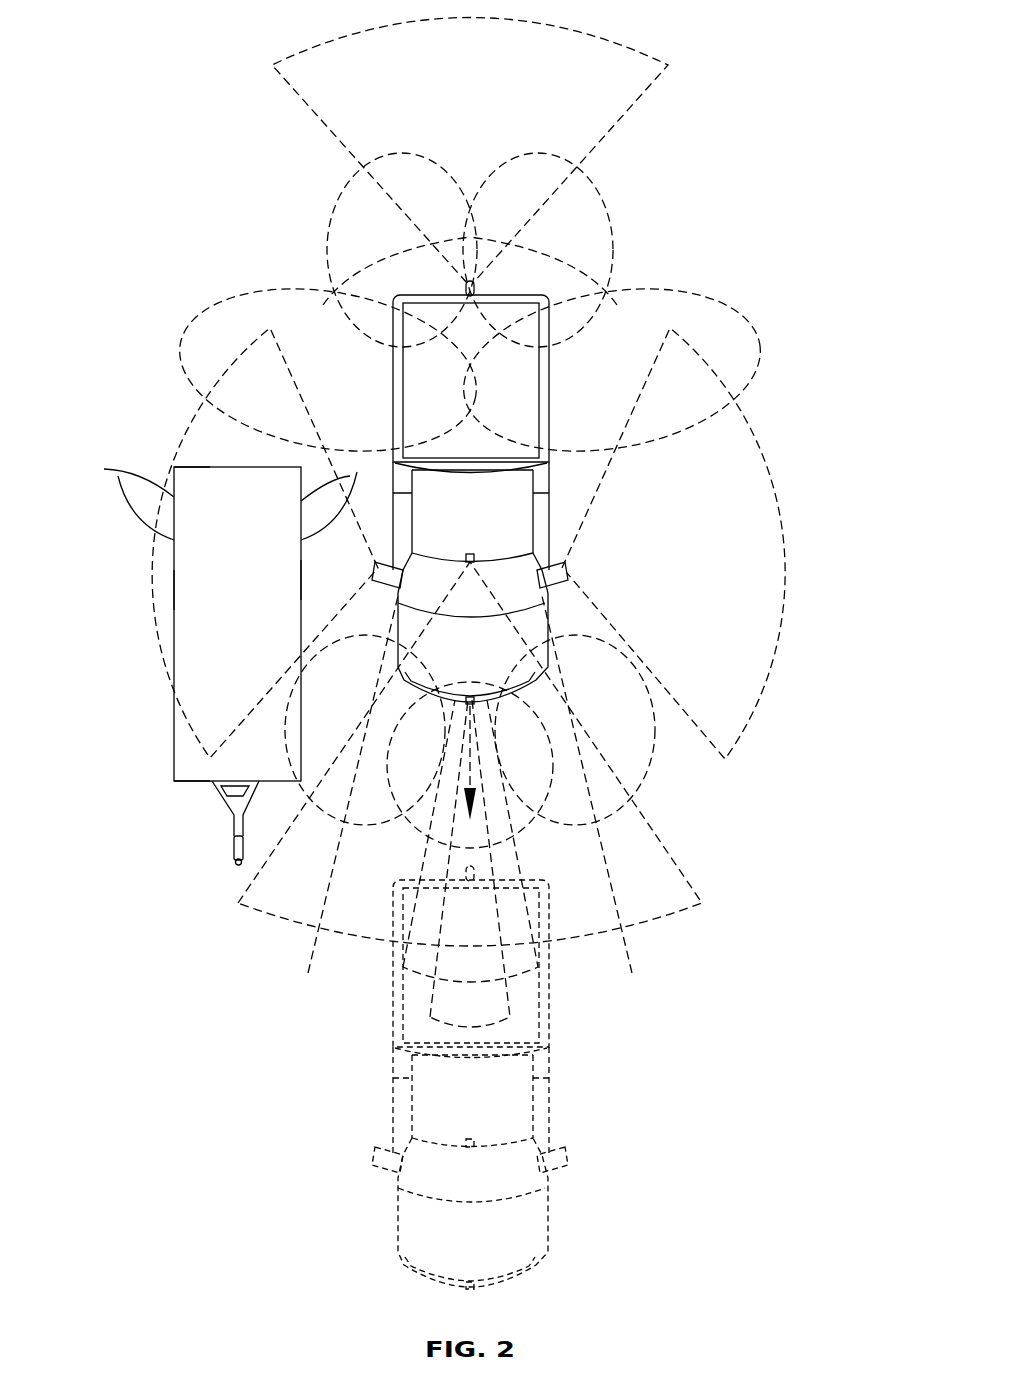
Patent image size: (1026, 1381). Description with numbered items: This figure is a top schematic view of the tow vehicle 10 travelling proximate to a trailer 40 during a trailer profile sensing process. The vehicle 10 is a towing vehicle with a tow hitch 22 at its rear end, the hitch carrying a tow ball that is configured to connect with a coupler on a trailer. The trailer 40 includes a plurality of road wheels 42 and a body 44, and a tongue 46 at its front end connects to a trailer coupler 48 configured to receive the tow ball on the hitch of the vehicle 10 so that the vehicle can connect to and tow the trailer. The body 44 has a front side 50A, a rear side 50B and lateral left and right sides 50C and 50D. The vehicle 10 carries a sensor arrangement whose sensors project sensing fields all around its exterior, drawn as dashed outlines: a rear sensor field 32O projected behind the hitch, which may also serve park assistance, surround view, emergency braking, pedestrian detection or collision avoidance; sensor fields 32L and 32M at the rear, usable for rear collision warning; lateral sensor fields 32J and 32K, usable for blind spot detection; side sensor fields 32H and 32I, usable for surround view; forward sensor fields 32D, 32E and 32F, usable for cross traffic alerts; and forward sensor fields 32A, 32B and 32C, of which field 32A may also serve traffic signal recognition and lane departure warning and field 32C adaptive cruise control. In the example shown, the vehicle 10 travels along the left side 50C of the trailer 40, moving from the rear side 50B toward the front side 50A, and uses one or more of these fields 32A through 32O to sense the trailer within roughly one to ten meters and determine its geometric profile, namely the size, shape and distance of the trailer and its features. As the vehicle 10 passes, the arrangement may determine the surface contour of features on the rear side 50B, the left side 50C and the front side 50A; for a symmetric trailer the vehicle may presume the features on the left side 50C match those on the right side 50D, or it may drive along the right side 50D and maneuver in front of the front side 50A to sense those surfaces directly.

The motor vehicle 10 is at (572, 280).
The tow hitch 22 is at (465, 283).
The rear sensor field 32O is at (660, 45).
The sensor field 32L is at (410, 152).
The sensor field 32M is at (530, 152).
The sensor field 32J is at (275, 298).
The sensor field 32K is at (705, 298).
The sensor field 32H is at (203, 403).
The sensor field 32I is at (752, 440).
The sensor field 32D is at (332, 823).
The sensor field 32E is at (461, 802).
The sensor field 32F is at (655, 763).
The sensor field 32A is at (617, 932).
The sensor field 32B is at (520, 976).
The sensor field 32C is at (492, 1028).
The trailer 40 is at (150, 690).
The road wheels 42 is at (104, 469).
The body 44 is at (222, 695).
The tongue 46 is at (234, 803).
The trailer coupler 48 is at (236, 866).
The front side 50A is at (190, 786).
The rear side 50B is at (207, 464).
The left side 50C is at (301, 585).
The right side 50D is at (175, 594).